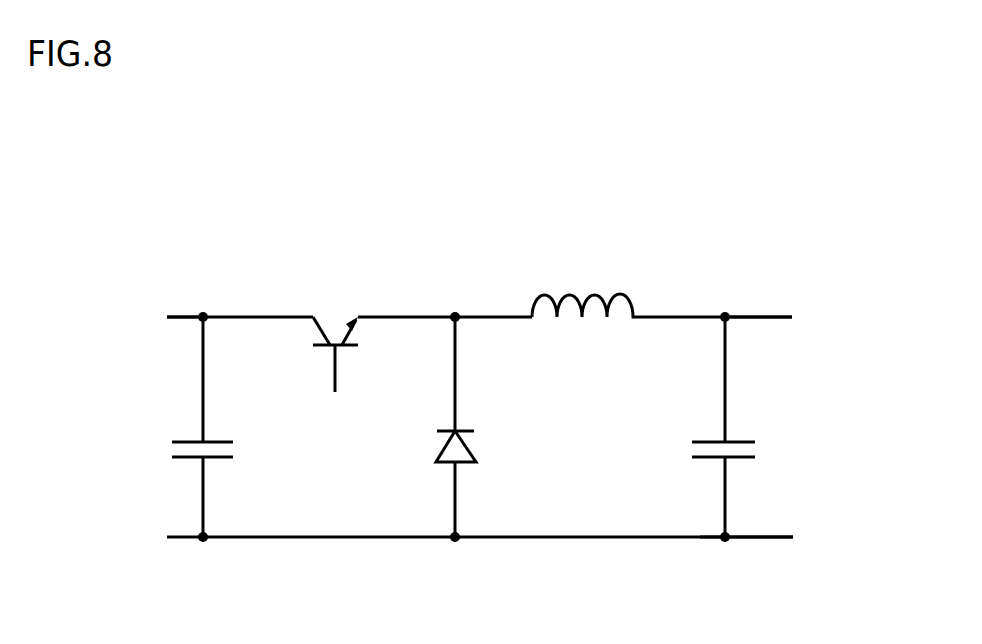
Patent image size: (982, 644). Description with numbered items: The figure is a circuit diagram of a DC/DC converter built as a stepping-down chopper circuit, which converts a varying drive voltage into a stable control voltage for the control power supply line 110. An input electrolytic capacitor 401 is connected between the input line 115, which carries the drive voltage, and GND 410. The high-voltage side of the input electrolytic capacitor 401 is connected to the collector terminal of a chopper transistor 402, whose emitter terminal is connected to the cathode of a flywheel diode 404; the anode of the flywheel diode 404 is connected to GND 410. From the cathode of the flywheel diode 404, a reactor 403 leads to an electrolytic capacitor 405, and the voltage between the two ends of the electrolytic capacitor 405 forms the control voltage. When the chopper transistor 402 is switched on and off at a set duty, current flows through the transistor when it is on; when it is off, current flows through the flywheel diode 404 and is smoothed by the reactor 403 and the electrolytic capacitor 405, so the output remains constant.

The input line (drive voltage) 115 is at (178, 313).
The control power supply line 110 is at (760, 313).
The GND 410 is at (725, 543).
The input electrolytic capacitor 401 is at (220, 442).
The chopper transistor 402 is at (338, 316).
The reactor 403 is at (583, 288).
The flywheel diode 404 is at (437, 449).
The electrolytic capacitor 405 is at (745, 442).